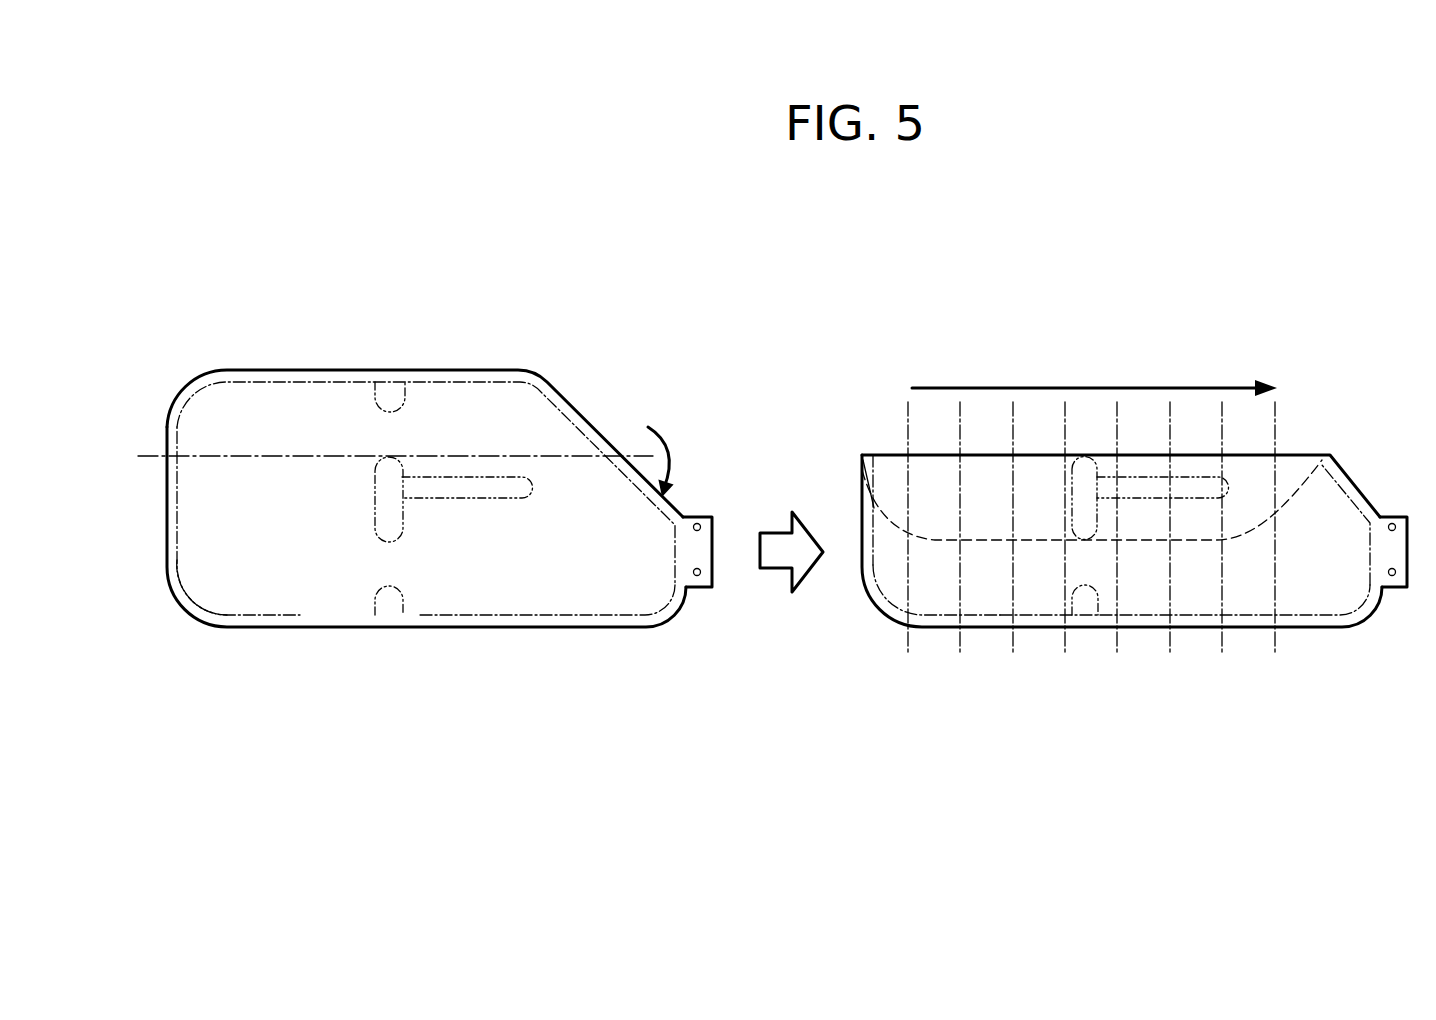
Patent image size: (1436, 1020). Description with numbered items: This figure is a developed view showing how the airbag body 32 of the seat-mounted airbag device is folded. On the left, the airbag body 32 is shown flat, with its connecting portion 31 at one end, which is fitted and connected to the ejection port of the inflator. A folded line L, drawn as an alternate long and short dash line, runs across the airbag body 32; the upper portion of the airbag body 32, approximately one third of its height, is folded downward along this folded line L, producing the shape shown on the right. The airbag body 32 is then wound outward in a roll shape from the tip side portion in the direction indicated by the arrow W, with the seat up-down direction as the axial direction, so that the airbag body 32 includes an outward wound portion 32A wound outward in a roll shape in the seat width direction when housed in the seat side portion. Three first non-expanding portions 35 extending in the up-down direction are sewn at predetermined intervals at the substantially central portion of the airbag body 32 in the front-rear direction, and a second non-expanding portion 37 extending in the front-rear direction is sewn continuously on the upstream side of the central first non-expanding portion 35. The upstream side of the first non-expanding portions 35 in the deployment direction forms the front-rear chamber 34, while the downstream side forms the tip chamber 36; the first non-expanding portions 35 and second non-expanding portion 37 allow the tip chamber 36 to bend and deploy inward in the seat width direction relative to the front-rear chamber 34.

The connecting portion 31 is at (703, 548).
The airbag body 32 is at (262, 362).
The outward wound portion 32A is at (1295, 365).
The front-rear chamber 34 is at (628, 600).
The first non-expanding portions 35 is at (420, 405).
The tip chamber 36 is at (210, 582).
The second non-expanding portion 37 is at (458, 500).
The folded line L is at (150, 455).
The arrow W is at (942, 385).